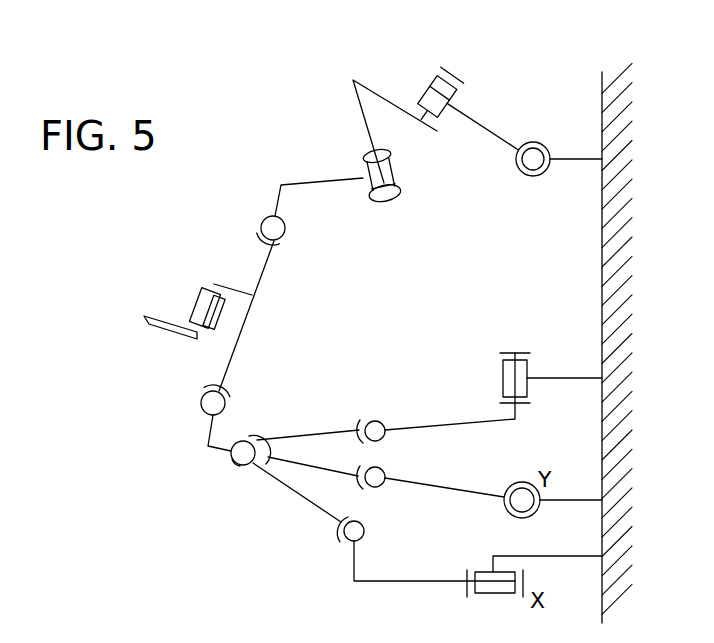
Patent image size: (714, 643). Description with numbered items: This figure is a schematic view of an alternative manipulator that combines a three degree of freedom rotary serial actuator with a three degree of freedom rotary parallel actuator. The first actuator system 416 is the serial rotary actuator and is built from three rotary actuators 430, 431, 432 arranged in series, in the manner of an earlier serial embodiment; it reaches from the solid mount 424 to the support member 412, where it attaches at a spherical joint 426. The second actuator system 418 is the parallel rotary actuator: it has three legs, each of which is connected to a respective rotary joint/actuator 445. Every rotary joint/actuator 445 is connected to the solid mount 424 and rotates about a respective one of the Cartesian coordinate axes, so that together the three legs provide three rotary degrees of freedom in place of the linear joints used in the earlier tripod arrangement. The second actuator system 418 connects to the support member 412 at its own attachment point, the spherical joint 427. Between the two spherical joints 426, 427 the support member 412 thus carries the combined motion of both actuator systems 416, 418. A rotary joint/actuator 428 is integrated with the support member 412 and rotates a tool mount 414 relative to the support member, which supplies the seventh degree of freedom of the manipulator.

The support member 412 is at (249, 313).
The tool mount 414 is at (167, 332).
The first actuator system 416 is at (415, 72).
The second actuator system 418 is at (293, 507).
The solid mount 424 is at (603, 270).
The spherical joint 426 is at (288, 232).
The spherical joint 427 is at (232, 402).
The rotary joint/actuator 428 is at (180, 296).
The rotary actuator 430 is at (328, 180).
The rotary actuator 431 is at (358, 105).
The rotary actuator 432 is at (502, 136).
The rotary joint/actuator 445 is at (417, 483).